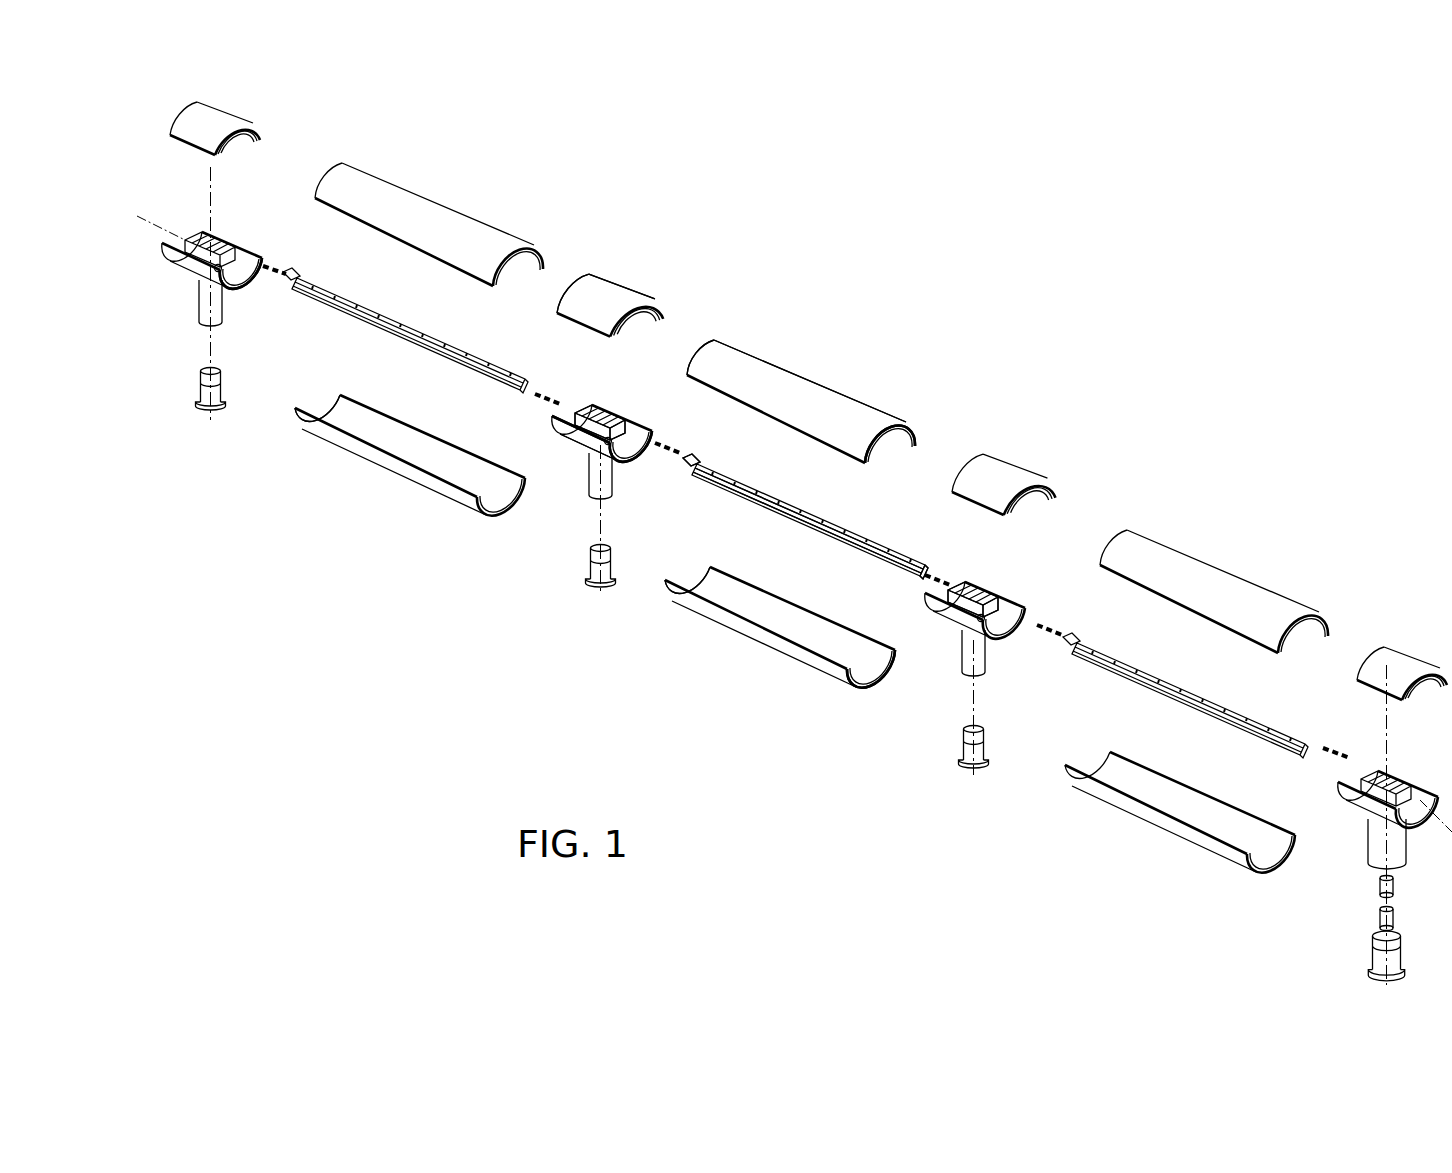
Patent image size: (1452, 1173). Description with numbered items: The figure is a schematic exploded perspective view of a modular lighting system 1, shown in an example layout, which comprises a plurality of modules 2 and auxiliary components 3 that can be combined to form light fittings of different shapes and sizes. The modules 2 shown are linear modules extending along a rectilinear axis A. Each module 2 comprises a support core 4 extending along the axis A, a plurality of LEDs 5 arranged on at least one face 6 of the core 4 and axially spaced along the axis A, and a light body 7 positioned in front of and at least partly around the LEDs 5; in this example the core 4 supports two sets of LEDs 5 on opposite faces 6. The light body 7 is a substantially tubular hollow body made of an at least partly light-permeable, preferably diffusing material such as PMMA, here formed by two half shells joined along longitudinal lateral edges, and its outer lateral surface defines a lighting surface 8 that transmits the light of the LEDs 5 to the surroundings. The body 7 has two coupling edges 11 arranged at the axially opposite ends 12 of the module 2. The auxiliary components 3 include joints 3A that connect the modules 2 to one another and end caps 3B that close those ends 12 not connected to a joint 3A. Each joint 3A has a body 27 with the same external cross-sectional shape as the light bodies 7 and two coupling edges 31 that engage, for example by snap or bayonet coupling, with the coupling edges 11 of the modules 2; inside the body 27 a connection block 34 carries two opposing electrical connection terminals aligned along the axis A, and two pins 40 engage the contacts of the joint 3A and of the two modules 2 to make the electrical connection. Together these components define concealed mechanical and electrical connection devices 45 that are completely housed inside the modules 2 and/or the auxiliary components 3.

The modular lighting system 1 is at (784, 526).
The module 2 is at (350, 495).
The auxiliary component 3 is at (278, 104).
The joint 3A is at (662, 260).
The end cap 3B is at (1406, 628).
The support core 4 is at (847, 554).
The LED 5 is at (792, 504).
The face 6 is at (748, 470).
The light body 7 is at (851, 400).
The lighting surface 8 is at (783, 356).
The coupling edge 11 is at (338, 404).
The end 12 is at (693, 565).
The body 27 is at (600, 292).
The coupling edge 31 is at (238, 286).
The connection block 34 is at (613, 404).
The pin 40 is at (268, 264).
The concealed mechanical and electrical connection device 45 is at (524, 436).
The axis A is at (153, 230).